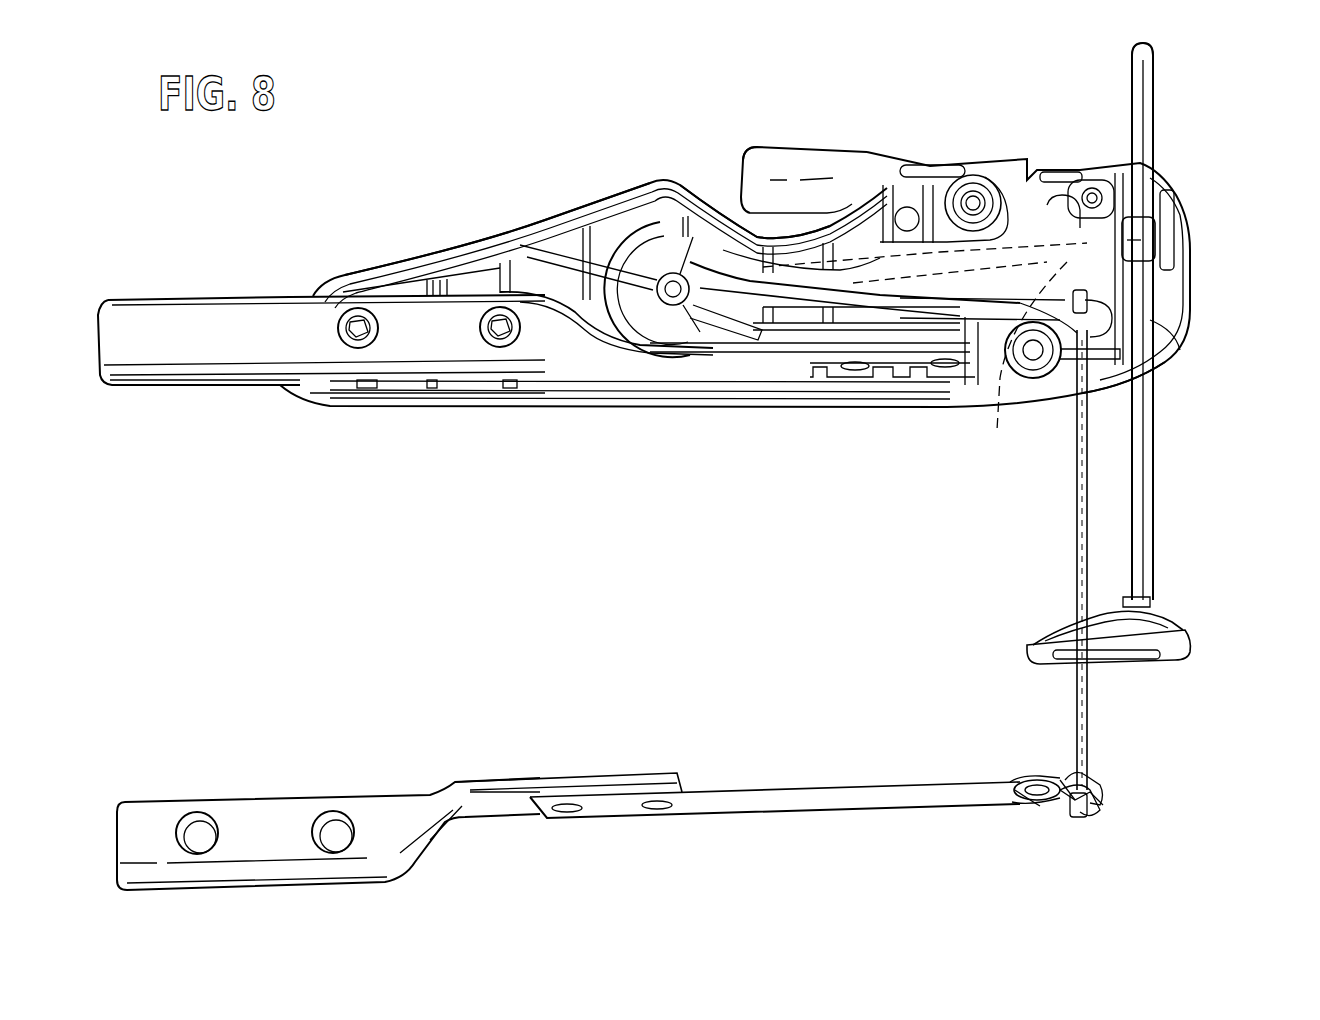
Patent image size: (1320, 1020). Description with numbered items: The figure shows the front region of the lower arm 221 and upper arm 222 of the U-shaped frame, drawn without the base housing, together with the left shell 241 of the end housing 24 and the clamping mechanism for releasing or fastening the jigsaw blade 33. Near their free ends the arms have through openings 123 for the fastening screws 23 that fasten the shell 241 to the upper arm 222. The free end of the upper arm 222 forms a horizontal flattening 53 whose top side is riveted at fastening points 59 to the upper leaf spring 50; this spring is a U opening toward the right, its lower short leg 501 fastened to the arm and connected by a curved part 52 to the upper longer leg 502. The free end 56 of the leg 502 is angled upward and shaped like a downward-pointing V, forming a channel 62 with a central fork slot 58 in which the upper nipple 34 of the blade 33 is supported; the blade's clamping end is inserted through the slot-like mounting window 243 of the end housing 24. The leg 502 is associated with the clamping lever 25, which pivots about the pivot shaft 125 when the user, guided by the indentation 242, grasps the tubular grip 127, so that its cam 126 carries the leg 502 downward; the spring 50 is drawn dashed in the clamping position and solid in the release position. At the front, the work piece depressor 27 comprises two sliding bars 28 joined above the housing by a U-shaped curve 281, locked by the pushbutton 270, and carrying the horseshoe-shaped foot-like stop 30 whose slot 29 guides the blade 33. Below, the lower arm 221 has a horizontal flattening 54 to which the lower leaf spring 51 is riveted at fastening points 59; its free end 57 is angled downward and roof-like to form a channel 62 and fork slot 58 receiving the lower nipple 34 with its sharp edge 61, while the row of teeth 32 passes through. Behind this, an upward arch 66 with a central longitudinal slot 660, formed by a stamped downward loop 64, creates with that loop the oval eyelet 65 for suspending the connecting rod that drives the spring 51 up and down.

The upper arm 222 is at (185, 318).
The through openings 123 is at (480, 325).
The fastening screws 23 is at (492, 340).
The end housing 24 is at (497, 213).
The left shell 241 is at (568, 212).
The indentation 242 is at (690, 192).
The clamping lever 25 is at (806, 150).
The grip 127 is at (742, 166).
The pivot shaft 125 is at (973, 195).
The cam 126 is at (1057, 224).
The upper leaf spring 50 is at (642, 246).
The curved part 52 is at (652, 224).
The lower short leg 501 is at (740, 334).
The upper long leg 502 is at (807, 300).
The horizontal flattening 53 is at (687, 352).
The fastening points 59 is at (853, 372).
The free end of upper leg 56 is at (1110, 302).
The nipple 34 is at (1092, 297).
The mounting window 243 is at (1172, 325).
The fork slot 58 is at (1180, 362).
The work piece depressor 27 is at (1160, 125).
The U-shaped curve 281 is at (1150, 50).
The pushbutton 270 is at (1192, 232).
The sliding bars 28 is at (1153, 527).
The jigsaw blade 33 is at (1077, 570).
The row of teeth 32 is at (1087, 585).
The slot 29 is at (1192, 630).
The foot-like stop 30 is at (1180, 658).
The lower arm 221 is at (163, 816).
The horizontal flattening 54 is at (573, 782).
The lower leaf spring 51 is at (810, 803).
The eyelet 65 is at (1033, 786).
The arch 66 is at (1028, 778).
The longitudinal slot 660 is at (1047, 787).
The sharp edge 61 is at (1097, 780).
The free end 57 is at (1105, 777).
The channel 62 is at (1064, 802).
The loop 64 is at (1040, 806).